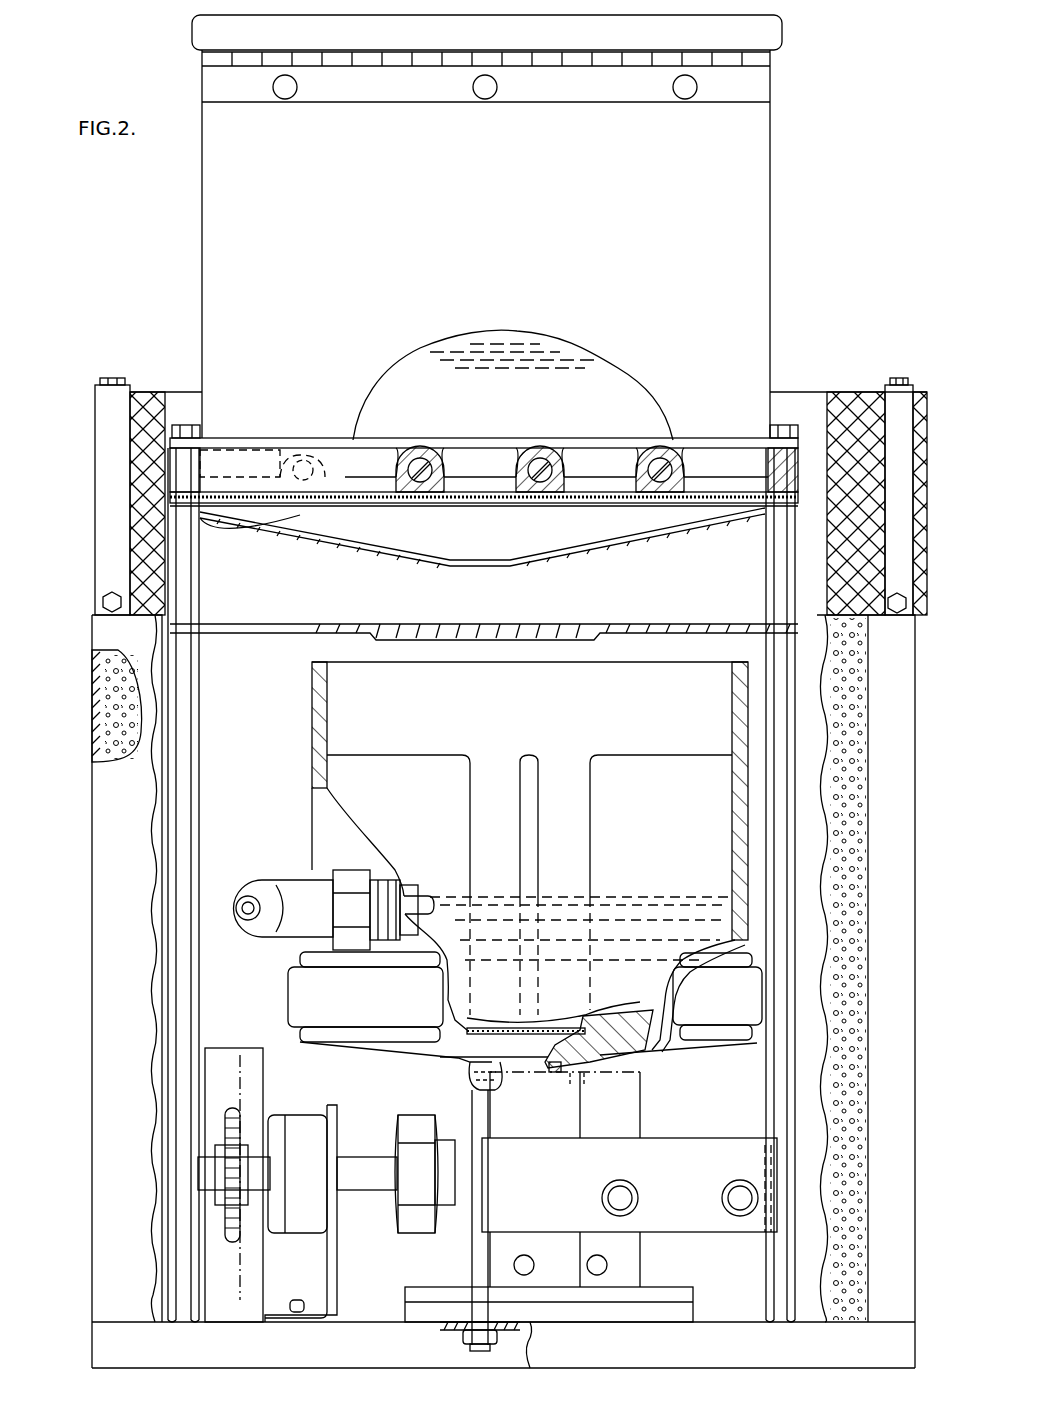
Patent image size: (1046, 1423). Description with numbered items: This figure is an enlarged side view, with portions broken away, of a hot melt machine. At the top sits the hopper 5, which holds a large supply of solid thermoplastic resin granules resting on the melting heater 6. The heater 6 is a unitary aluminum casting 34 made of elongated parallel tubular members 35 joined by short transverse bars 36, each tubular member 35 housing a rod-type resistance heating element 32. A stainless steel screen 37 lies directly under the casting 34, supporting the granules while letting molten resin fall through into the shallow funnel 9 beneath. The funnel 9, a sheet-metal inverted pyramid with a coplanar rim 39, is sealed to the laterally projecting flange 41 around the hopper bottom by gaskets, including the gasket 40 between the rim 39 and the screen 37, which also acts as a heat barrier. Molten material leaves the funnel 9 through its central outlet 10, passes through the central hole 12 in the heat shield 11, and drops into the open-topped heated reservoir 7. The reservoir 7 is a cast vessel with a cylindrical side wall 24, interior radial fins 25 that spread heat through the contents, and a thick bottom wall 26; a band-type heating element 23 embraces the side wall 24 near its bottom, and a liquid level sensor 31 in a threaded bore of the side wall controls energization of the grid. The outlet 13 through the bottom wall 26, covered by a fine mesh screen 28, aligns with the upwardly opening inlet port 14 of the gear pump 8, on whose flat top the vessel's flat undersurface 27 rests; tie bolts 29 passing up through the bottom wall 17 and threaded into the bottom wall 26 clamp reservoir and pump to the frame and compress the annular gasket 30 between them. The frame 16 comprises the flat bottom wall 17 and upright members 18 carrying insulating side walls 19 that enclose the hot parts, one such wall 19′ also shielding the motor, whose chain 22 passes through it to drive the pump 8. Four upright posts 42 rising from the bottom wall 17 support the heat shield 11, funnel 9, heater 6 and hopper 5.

The hopper 5 is at (755, 200).
The melting heater 6 is at (70, 618).
The heated reservoir 7 is at (330, 818).
The gear pump 8 is at (626, 1110).
The funnel 9 is at (568, 556).
The central outlet 10 is at (480, 560).
The heat shield 11 is at (645, 625).
The central hole 12 is at (487, 628).
The outlet 13 is at (536, 1058).
The inlet port 14 is at (535, 1082).
The frame 16 is at (86, 876).
The bottom wall 17 is at (378, 1320).
The upright members 18 is at (106, 803).
The side walls 19 is at (110, 731).
The insulating wall 19′ is at (262, 987).
The chain 22 is at (245, 1070).
The band-type electric heating element 23 is at (713, 1042).
The side wall 24 is at (312, 737).
The fins 25 is at (418, 762).
The bottom wall 26 is at (628, 1012).
The flat undersurface 27 is at (577, 1073).
The mesh screen 28 is at (552, 1027).
The tie bolt 29 is at (470, 1258).
The annular gasket 30 is at (553, 1073).
The liquid level sensor 31 is at (412, 898).
The resistance heating element 32 is at (416, 450).
The casting 34 is at (250, 452).
The tubular members 35 is at (440, 452).
The bars 36 is at (488, 478).
The screen 37 is at (416, 505).
The rim 39 is at (200, 520).
The gasket 40 is at (320, 540).
The flange 41 is at (325, 440).
The upright posts 42 is at (188, 708).